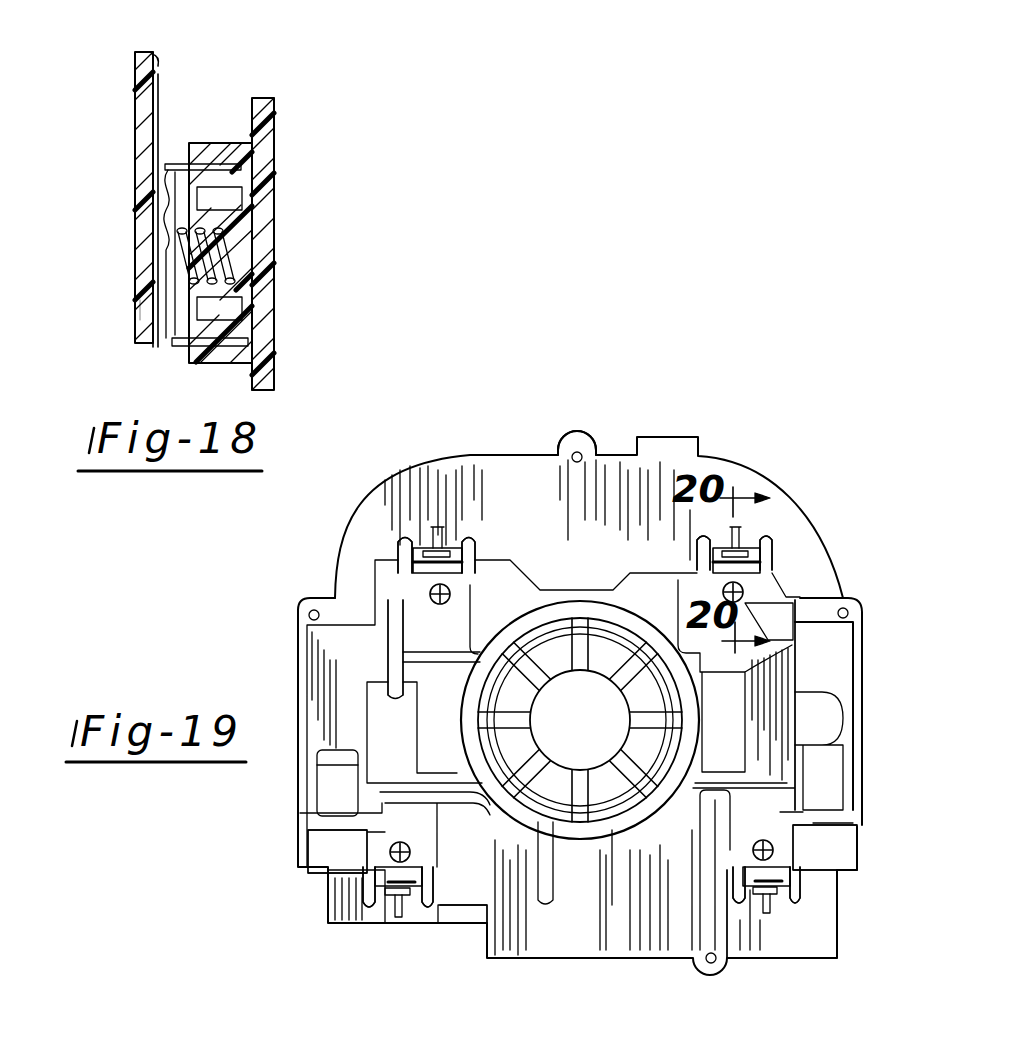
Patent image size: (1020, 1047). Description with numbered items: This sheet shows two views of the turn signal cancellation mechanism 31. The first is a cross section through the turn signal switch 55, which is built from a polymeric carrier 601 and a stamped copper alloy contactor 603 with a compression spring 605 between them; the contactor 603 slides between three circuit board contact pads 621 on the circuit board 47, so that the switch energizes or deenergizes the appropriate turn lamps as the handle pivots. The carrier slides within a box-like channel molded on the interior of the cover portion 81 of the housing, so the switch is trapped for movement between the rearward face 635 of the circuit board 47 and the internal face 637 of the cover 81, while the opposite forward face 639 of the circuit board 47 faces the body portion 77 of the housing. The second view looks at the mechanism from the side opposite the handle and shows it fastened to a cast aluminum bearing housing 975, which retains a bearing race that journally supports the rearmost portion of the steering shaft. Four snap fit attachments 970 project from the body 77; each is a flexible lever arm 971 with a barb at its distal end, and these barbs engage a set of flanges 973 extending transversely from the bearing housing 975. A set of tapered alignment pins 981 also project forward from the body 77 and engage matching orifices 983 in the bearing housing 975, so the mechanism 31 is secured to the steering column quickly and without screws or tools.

In FIG. 19, the turn signal cancellation mechanism 31 is at (497, 415).
In FIG. 18, the circuit board 47 is at (147, 310).
In FIG. 18, the turn signal switch 55 is at (216, 118).
In FIG. 19, the body portion 77 is at (603, 457).
In FIG. 18, the cover portion 81 is at (265, 140).
In FIG. 18, the polymeric carrier 601 is at (244, 233).
In FIG. 18, the contactor 603 is at (180, 344).
In FIG. 18, the compression spring 605 is at (158, 207).
In FIG. 18, the circuit board contact pads 621 is at (158, 115).
In FIG. 18, the rearward face of circuit board 635 is at (152, 54).
In FIG. 18, the internal face of cover 637 is at (242, 115).
In FIG. 18, the forward face of circuit board 639 is at (140, 85).
In FIG. 19, the snap fit attachments 970 is at (398, 574).
In FIG. 19, the flexible lever arm 971 is at (468, 538).
In FIG. 19, the flanges 973 is at (390, 582).
In FIG. 19, the bearing housing 975 is at (548, 647).
In FIG. 19, the tapered alignment pins 981 is at (430, 594).
In FIG. 19, the orifices 983 is at (450, 603).